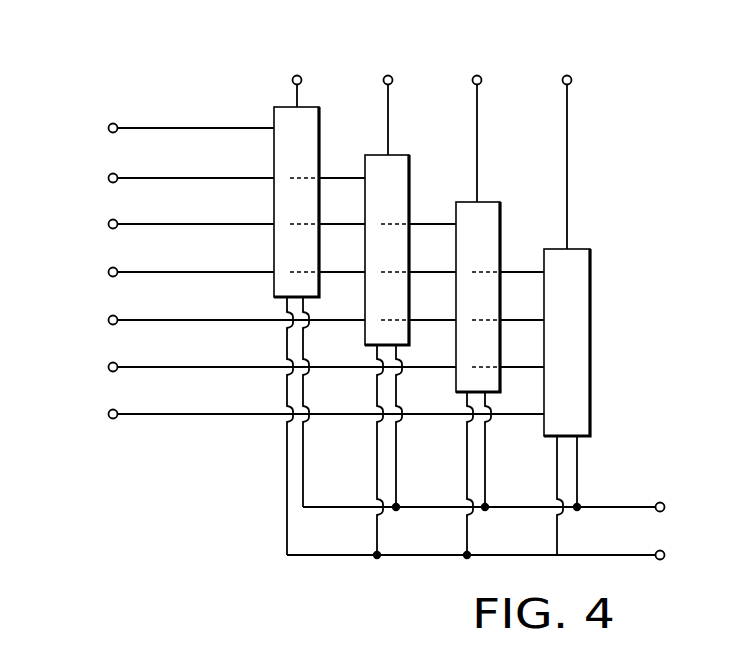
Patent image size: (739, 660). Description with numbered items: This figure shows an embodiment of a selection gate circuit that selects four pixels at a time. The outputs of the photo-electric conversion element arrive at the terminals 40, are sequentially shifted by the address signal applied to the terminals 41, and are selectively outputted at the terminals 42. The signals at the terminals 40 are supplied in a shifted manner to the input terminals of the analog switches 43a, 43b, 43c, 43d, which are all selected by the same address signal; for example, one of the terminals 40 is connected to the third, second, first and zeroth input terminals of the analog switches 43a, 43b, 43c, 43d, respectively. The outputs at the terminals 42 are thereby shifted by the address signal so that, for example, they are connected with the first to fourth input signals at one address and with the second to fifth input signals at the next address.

The terminals 40 is at (76, 106).
The terminals 41 is at (671, 497).
The terminals 42 is at (626, 42).
The analog switch 43a is at (321, 116).
The analog switch 43b is at (410, 160).
The analog switch 43c is at (501, 208).
The analog switch 43d is at (591, 258).